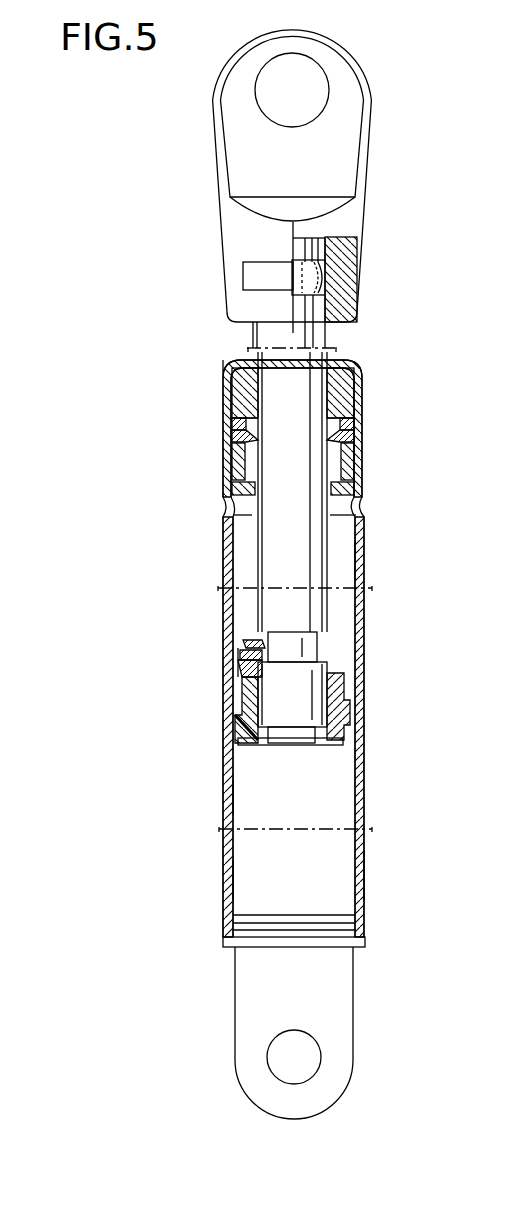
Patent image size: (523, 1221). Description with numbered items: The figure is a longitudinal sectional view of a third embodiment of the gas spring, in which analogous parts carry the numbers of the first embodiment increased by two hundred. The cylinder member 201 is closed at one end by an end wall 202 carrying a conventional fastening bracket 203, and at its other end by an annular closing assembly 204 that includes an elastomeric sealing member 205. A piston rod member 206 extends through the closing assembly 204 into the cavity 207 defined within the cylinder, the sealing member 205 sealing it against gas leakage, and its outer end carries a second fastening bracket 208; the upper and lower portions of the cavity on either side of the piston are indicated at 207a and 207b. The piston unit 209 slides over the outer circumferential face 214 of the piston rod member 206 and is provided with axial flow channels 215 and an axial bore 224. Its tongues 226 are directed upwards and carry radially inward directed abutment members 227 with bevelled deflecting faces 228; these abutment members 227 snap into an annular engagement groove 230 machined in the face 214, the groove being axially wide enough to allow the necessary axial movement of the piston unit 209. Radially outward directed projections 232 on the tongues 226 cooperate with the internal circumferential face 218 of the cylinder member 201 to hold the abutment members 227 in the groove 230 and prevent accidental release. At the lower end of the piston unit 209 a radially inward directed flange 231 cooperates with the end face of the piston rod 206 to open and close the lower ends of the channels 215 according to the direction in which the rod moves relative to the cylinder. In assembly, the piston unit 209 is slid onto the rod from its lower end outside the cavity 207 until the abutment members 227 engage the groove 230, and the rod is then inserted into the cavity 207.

The cylinder member 201 is at (365, 872).
The end wall 202 is at (330, 947).
The fastening bracket 203 is at (343, 1000).
The annular closing assembly 204 is at (347, 387).
The sealing member 205 is at (342, 432).
The piston rod member 206 is at (272, 546).
The cavity 207 is at (335, 793).
The upper cylinder portion 207a is at (340, 567).
The lower cylinder portion 207b is at (253, 882).
The fastening bracket 208 is at (352, 225).
The piston unit 209 is at (240, 712).
The outer circumferential face 214 is at (330, 532).
The channels 215 is at (330, 672).
The internal circumferential face 218 is at (240, 795).
The axial bore 224 is at (343, 718).
The tongues 226 is at (250, 678).
The abutment members 227 is at (250, 641).
The bevelled deflecting faces 228 is at (240, 636).
The annular engagement groove 230 is at (318, 643).
The radially inward directed flange 231 is at (322, 745).
The radially outward directed projections 232 is at (241, 654).